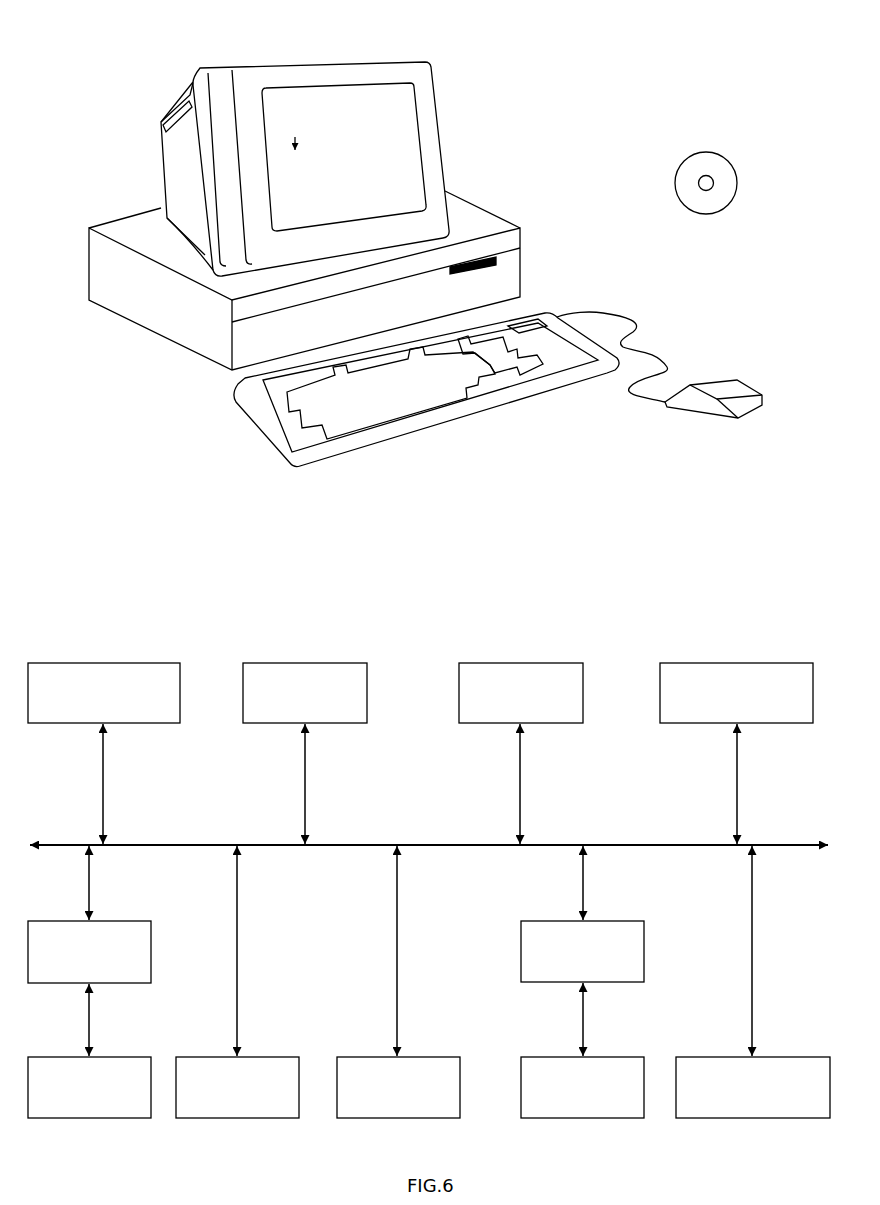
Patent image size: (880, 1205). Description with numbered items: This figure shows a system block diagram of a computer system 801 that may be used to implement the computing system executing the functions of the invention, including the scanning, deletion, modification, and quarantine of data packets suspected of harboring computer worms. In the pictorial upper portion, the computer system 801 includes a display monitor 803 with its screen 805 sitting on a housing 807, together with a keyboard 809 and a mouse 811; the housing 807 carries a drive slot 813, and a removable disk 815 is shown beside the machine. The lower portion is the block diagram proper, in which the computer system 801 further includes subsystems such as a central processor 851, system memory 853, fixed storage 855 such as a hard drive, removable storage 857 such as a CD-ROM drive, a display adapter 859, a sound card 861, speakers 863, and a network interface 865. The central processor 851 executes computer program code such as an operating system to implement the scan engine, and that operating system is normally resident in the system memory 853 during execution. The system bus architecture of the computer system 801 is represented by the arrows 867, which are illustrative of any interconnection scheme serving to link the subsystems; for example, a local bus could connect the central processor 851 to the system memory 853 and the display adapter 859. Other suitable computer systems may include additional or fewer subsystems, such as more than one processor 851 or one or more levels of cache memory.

The computer system 801 is at (634, 38).
The display monitor 803 is at (443, 167).
The screen 805 is at (405, 122).
The housing / cabinet 807 is at (187, 352).
The keyboard 809 is at (435, 427).
The mouse 811 is at (753, 390).
The removable media drive slot 813 is at (497, 257).
The removable disk (CD-ROM) 815 is at (723, 153).
The central processor 851 is at (135, 662).
The system memory 853 is at (333, 662).
The fixed storage 855 is at (552, 662).
The removable storage 857 is at (768, 662).
The display adapter 859 is at (119, 920).
The sound card 861 is at (612, 920).
The speakers 863 is at (612, 1057).
The network interface 865 is at (768, 1057).
The arrows representing system bus architecture 867 is at (752, 843).